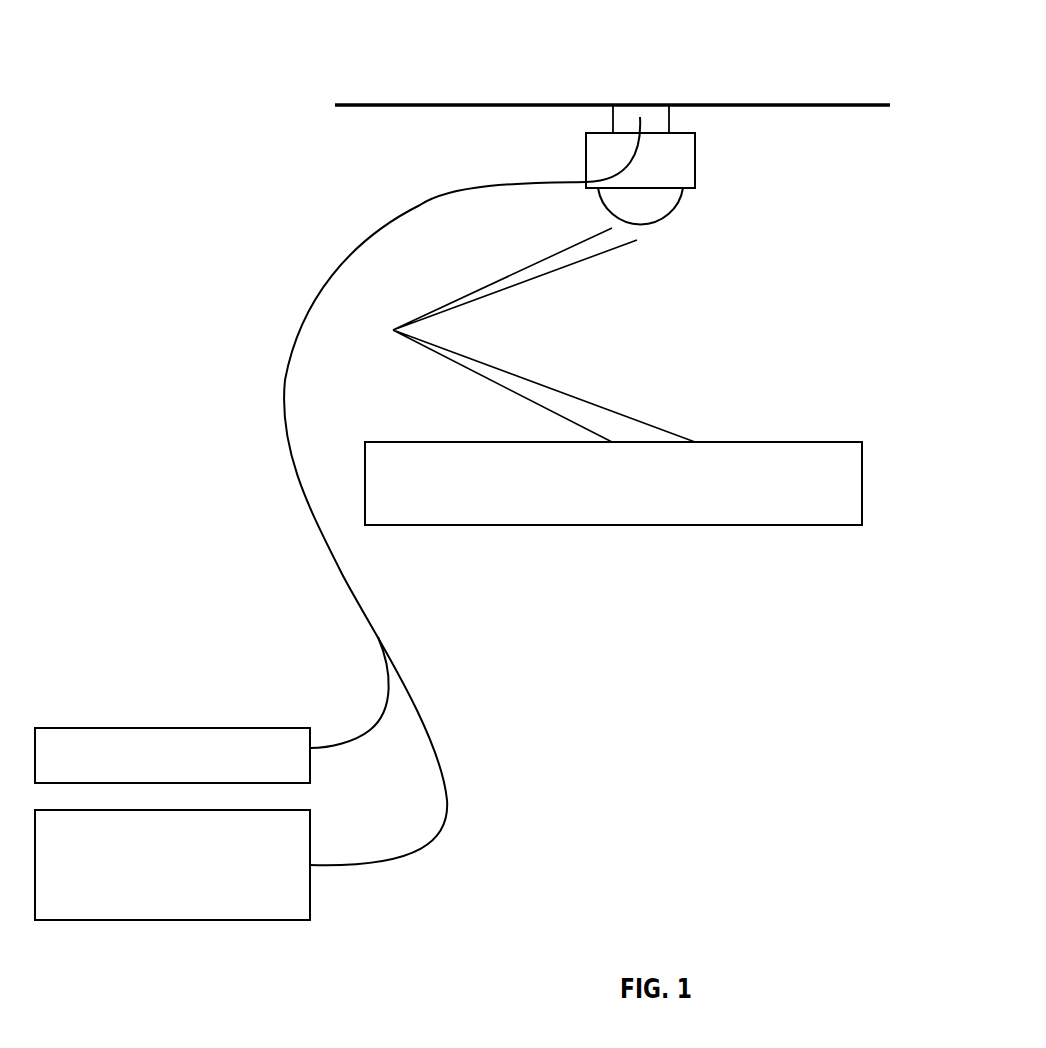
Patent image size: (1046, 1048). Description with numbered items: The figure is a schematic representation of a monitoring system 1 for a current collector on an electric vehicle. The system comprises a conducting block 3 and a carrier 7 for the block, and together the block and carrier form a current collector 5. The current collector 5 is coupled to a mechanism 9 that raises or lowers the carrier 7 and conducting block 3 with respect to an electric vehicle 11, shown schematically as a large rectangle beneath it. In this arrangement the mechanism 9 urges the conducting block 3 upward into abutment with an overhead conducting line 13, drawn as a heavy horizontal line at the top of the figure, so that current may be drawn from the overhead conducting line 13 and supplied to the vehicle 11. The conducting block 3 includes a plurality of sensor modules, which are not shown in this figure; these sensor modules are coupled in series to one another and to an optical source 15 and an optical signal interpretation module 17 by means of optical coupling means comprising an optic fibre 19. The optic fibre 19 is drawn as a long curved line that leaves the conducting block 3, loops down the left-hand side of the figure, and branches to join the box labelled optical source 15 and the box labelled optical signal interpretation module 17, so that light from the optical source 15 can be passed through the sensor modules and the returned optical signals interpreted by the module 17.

The monitoring system 1 is at (192, 212).
The conducting block 3 is at (627, 125).
The current collector 5 is at (775, 183).
The carrier 7 is at (680, 173).
The mechanism 9 is at (530, 272).
The electric vehicle 11 is at (707, 497).
The overhead conducting line 13 is at (385, 105).
The optical source 15 is at (160, 728).
The optical signal interpretation module 17 is at (258, 920).
The optic fibre 19 is at (302, 490).